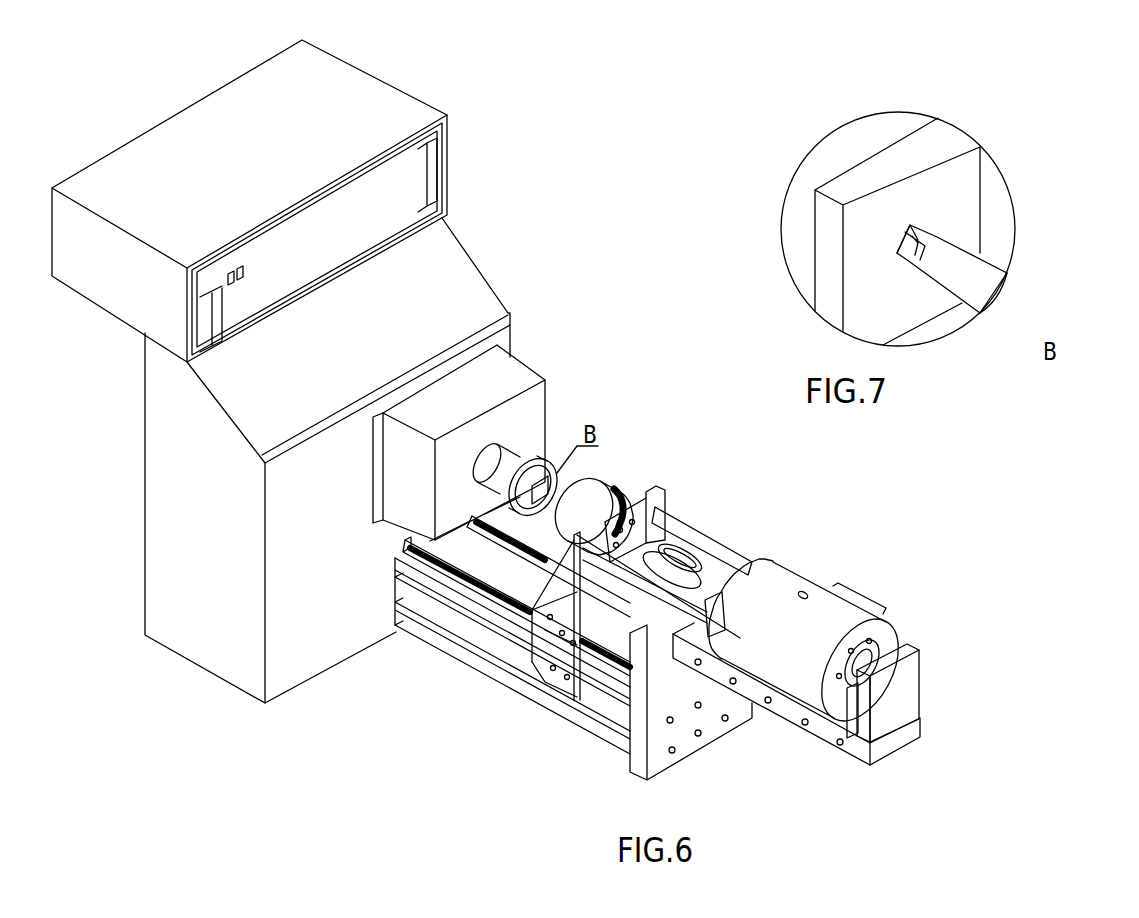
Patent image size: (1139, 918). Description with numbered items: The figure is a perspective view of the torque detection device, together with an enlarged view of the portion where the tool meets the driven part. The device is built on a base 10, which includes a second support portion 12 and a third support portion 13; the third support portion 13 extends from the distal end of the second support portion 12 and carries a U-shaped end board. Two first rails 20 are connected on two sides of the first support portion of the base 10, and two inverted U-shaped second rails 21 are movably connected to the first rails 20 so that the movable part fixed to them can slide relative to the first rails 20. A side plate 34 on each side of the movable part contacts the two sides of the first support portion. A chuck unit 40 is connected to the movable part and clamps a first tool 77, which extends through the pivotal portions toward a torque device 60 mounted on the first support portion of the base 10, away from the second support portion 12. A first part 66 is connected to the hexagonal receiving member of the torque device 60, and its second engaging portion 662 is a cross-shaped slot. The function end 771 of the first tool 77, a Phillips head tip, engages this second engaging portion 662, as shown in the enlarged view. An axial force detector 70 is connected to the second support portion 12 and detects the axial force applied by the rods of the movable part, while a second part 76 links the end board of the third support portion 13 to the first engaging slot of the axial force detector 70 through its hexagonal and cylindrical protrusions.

In FIG. 6, the base 10 is at (602, 740).
In FIG. 6, the second support portion 12 is at (803, 730).
In FIG. 6, the third support portion 13 is at (912, 695).
In FIG. 6, the first rails 20 is at (487, 598).
In FIG. 6, the second rails 21 is at (537, 632).
In FIG. 6, the side plate 34 is at (553, 677).
In FIG. 6, the chuck unit 40 is at (583, 495).
In FIG. 6, the torque device 60 is at (173, 507).
In FIG. 7, the first part 66 is at (855, 138).
In FIG. 7, the second engaging portion 662 is at (903, 237).
In FIG. 6, the axial force detector 70 is at (790, 577).
In FIG. 6, the second part 76 is at (870, 643).
In FIG. 6, the first tool 77 is at (668, 540).
In FIG. 7, the function end 771 is at (938, 237).